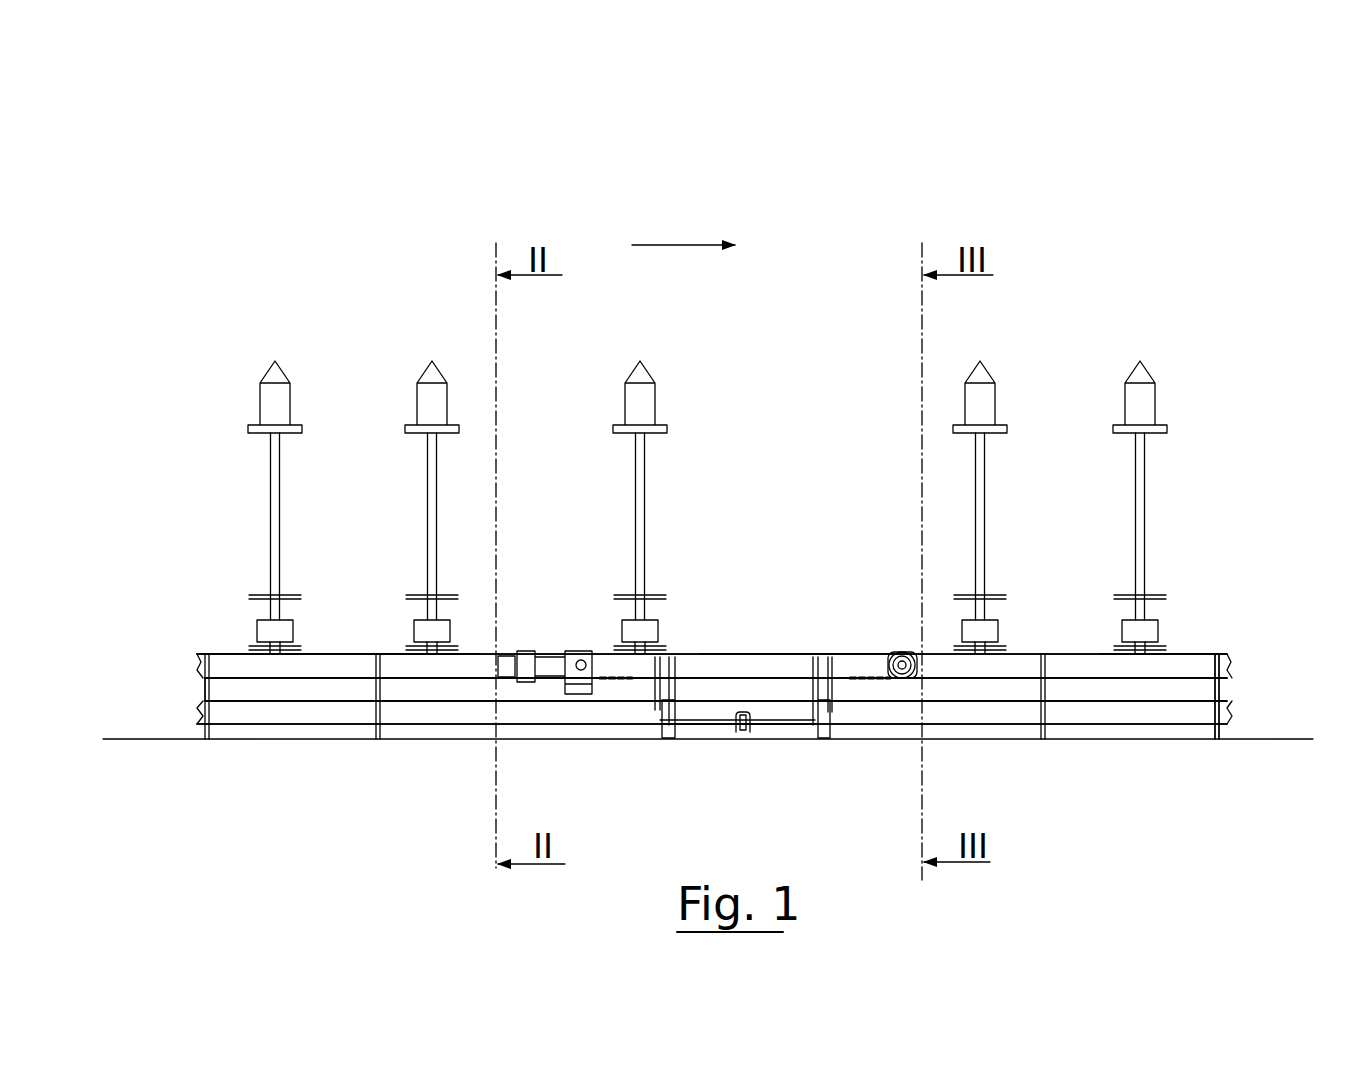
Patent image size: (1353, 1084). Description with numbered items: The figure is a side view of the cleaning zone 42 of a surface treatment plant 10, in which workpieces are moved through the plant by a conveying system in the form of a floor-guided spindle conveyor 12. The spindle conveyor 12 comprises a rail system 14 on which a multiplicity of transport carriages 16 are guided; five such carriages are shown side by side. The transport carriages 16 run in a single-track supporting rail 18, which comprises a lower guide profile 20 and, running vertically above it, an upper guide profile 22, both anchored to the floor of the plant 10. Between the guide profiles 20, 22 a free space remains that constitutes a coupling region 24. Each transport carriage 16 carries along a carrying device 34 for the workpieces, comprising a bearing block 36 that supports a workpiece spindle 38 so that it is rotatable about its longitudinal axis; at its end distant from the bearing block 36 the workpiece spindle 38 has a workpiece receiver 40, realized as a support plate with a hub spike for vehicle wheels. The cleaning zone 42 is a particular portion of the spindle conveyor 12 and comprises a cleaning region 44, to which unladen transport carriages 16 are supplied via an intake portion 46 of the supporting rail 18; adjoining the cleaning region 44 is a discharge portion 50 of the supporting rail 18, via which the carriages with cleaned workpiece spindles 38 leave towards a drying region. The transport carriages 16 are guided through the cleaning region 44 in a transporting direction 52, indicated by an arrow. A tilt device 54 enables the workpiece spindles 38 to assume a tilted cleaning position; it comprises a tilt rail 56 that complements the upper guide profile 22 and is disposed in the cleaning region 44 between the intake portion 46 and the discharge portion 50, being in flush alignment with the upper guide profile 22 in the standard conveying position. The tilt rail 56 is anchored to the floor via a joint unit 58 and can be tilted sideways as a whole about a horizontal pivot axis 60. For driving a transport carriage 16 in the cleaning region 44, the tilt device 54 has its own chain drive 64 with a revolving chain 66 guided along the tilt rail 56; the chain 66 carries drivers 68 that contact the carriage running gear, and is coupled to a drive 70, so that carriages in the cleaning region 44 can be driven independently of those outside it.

The surface treatment plant 10 is at (1224, 203).
The floor-guided spindle conveyor 12 is at (1175, 746).
The rail system 14 is at (1242, 608).
The transport carriage 16 is at (253, 634).
The supporting rail 18 is at (226, 744).
The lower guide profile 20 is at (210, 715).
The upper guide profile 22 is at (213, 663).
The coupling region 24 is at (231, 690).
The carrying device 34 is at (297, 543).
The bearing block 36 is at (280, 628).
The workpiece spindle 38 is at (272, 487).
The workpiece receiver 40 is at (299, 401).
The cleaning zone 42 is at (244, 201).
The cleaning region 44 is at (754, 210).
The intake portion 46 is at (351, 747).
The discharge portion 50 is at (1087, 747).
The transporting direction 52 is at (680, 243).
The tilt device 54 is at (844, 747).
The tilt rail 56 is at (795, 665).
The joint unit 58 is at (706, 743).
The horizontal pivot axis 60 is at (776, 741).
The chain drive 64 is at (611, 688).
The revolving chain 66 is at (865, 650).
The driver 68 is at (613, 647).
The drive 70 is at (570, 692).